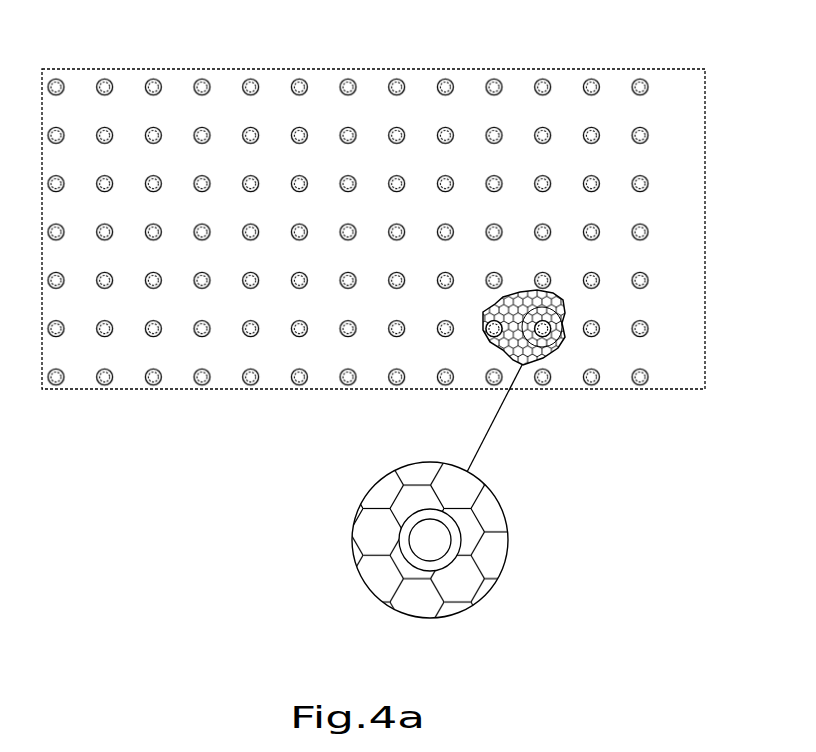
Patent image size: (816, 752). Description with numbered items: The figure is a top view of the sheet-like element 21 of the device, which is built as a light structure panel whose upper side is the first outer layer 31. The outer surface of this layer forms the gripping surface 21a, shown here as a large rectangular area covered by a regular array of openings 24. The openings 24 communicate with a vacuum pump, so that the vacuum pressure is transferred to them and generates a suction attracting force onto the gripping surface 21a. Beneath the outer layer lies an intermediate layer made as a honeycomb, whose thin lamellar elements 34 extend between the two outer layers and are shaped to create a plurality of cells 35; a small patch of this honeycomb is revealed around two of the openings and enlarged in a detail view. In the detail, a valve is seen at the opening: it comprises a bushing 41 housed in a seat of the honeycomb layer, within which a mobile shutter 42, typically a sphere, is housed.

The sheet-like element 21 is at (113, 461).
The gripping surface 21a is at (173, 134).
The first outer layer 31 is at (566, 112).
The bushing 41 is at (428, 510).
The mobile shutter 42 is at (440, 538).
The cells 35 is at (372, 528).
The thin lamellar elements 34 is at (370, 570).
The openings 24 is at (415, 559).